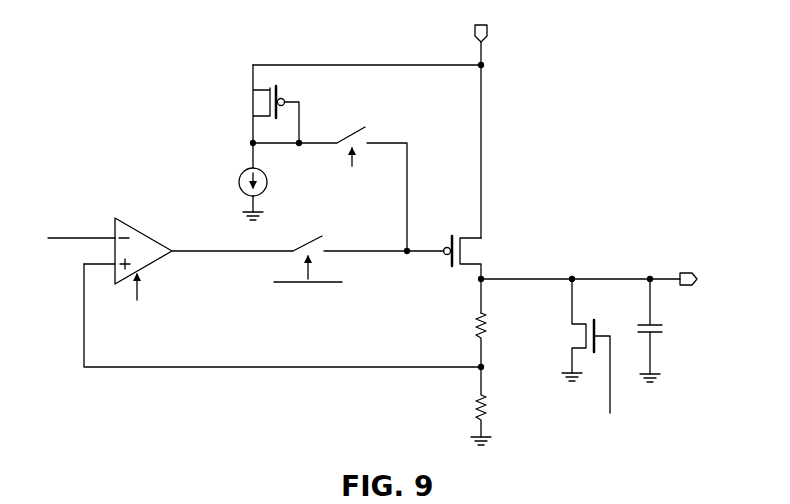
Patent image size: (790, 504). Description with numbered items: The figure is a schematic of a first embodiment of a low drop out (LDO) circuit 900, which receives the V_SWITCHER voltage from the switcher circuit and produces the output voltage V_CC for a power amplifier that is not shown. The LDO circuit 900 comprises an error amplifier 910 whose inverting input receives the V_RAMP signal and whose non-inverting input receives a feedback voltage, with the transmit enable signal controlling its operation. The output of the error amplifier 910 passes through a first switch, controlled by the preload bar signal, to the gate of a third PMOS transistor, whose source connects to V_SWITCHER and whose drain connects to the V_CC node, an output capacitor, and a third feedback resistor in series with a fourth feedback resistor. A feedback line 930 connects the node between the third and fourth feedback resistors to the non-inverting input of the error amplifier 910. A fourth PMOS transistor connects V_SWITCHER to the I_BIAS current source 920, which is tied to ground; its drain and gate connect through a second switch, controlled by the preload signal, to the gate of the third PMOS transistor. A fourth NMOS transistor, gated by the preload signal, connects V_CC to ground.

The low drop out (LDO) circuit 900 is at (602, 107).
The error amplifier 910 is at (130, 221).
The current source 920 is at (240, 192).
The feedback line 930 is at (240, 364).